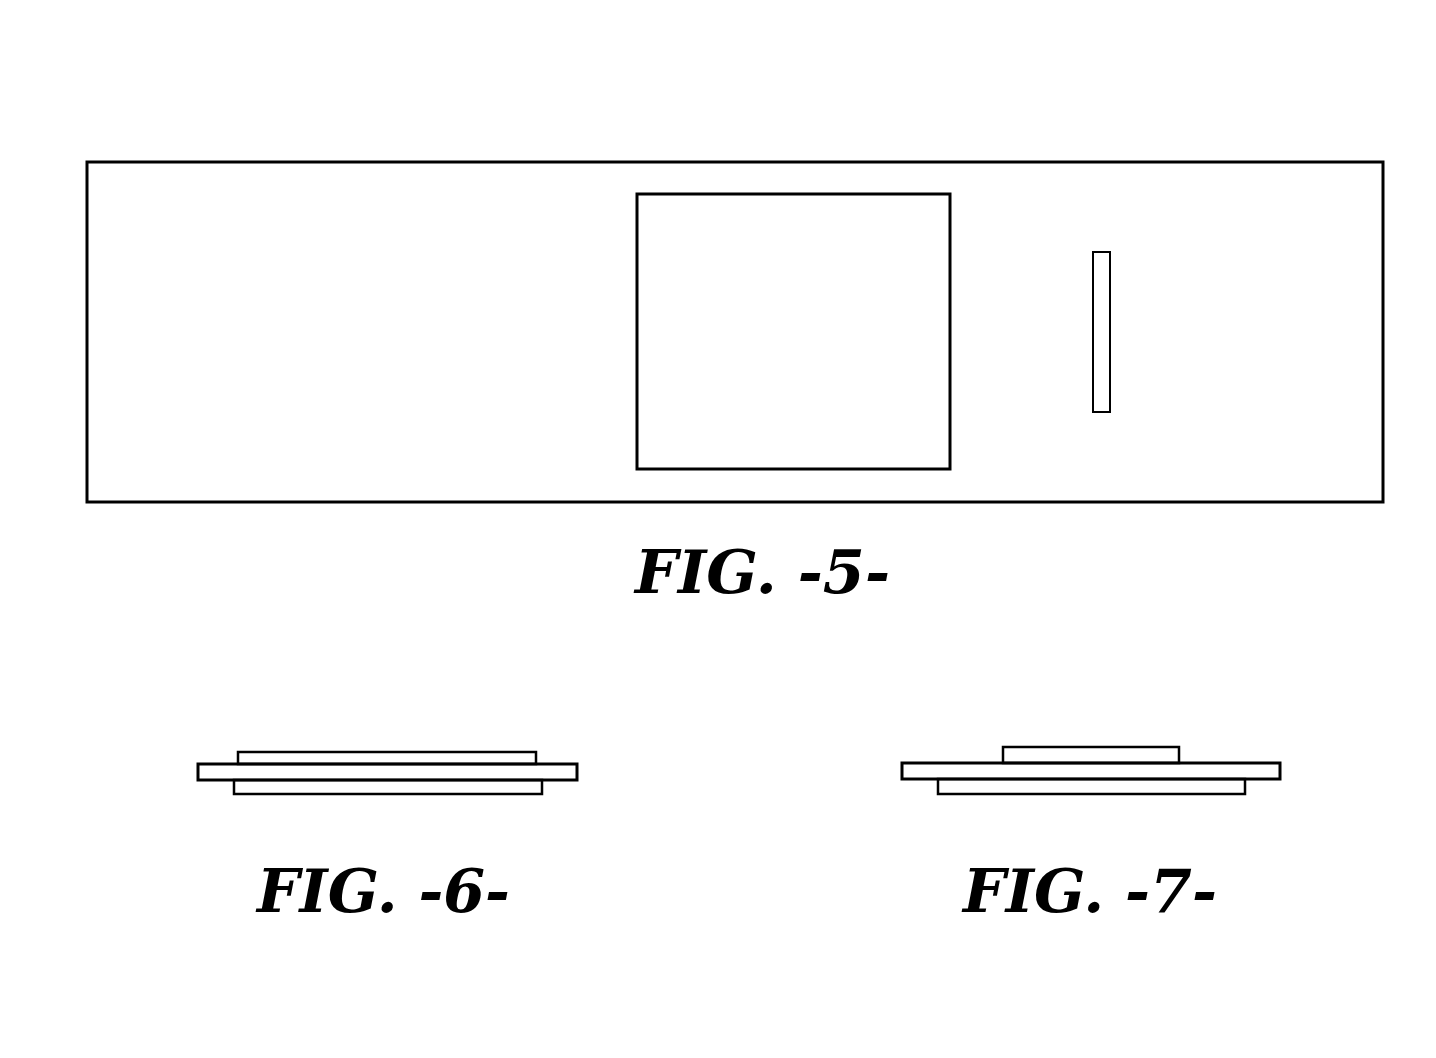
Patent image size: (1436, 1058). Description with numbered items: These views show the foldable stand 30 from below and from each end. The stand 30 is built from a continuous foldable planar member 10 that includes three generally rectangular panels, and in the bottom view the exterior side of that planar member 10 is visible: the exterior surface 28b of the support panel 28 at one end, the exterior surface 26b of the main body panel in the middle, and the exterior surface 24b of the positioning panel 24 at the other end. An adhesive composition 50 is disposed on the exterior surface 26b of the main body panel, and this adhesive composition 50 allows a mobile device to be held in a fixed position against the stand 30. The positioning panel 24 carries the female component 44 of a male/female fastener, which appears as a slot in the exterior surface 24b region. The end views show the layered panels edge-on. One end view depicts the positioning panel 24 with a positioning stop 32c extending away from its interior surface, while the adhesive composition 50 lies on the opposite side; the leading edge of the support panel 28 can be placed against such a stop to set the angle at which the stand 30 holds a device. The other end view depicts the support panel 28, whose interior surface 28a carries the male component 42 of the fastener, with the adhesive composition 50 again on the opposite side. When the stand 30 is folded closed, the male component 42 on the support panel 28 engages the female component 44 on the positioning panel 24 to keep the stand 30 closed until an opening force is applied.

In FIG. 5, the continuous foldable planar member 10 is at (1276, 182).
In FIG. 5, the exterior surface of the support panel 28b is at (253, 183).
In FIG. 5, the exterior surface of the positioning panel 24b is at (1310, 480).
In FIG. 5, the exterior surface of the main body panel 26b is at (700, 175).
In FIG. 5, the adhesive composition 50 is at (828, 220).
In FIG. 6, the adhesive composition 50 is at (260, 785).
In FIG. 7, the adhesive composition 50 is at (967, 787).
In FIG. 5, the female component 44 is at (1104, 266).
In FIG. 5, the foldable stand 30 is at (1003, 118).
In FIG. 6, the positioning panel 24 is at (551, 770).
In FIG. 6, the positioning stop 32c is at (408, 758).
In FIG. 7, the support panel 28 is at (1253, 782).
In FIG. 7, the interior surface of the support panel 28a is at (1256, 768).
In FIG. 7, the male component 42 is at (1118, 755).